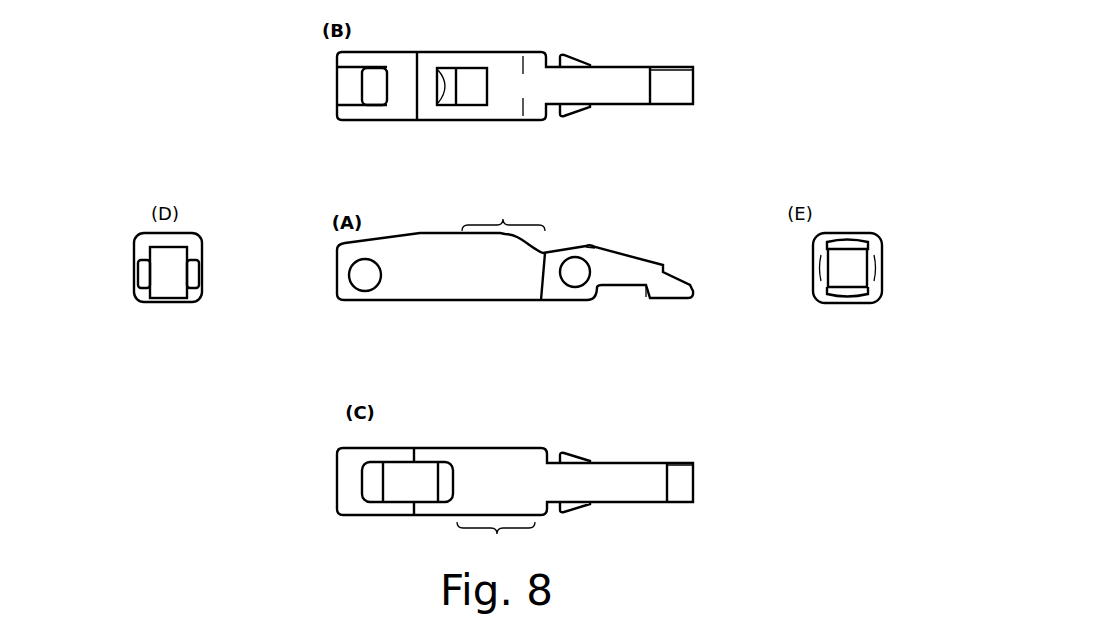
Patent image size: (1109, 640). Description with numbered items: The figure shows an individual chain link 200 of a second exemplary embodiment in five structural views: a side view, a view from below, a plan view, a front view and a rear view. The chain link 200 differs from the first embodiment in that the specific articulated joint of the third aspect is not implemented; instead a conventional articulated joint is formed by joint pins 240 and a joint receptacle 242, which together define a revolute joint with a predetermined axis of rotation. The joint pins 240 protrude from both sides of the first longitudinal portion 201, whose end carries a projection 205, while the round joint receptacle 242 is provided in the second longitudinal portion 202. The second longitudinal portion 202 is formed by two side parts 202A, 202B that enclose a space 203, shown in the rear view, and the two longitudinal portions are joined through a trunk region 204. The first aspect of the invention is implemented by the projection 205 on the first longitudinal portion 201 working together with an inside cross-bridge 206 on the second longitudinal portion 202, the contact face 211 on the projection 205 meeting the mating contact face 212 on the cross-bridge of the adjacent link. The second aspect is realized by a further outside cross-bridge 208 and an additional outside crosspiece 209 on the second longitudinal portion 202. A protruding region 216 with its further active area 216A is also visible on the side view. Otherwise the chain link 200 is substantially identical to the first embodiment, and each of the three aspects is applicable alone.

The chain link 200 is at (721, 67).
The first longitudinal portion 201 is at (555, 44).
The second longitudinal portion 202 is at (540, 159).
The side part 202A is at (398, 50).
The side part 202B is at (355, 123).
The space 203 is at (835, 280).
The trunk region 204 is at (501, 378).
The projection 205 is at (668, 95).
The inside cross-bridge 206 is at (400, 493).
The outside cross-bridge 208 is at (352, 83).
The outside crosspiece 209 is at (473, 92).
The contact face 211 is at (644, 294).
The contact face 212 is at (446, 104).
The pivot hole 216 is at (616, 265).
The peak 216A is at (589, 244).
The joint pin 240 is at (592, 58).
The joint receptacle 242 is at (367, 280).